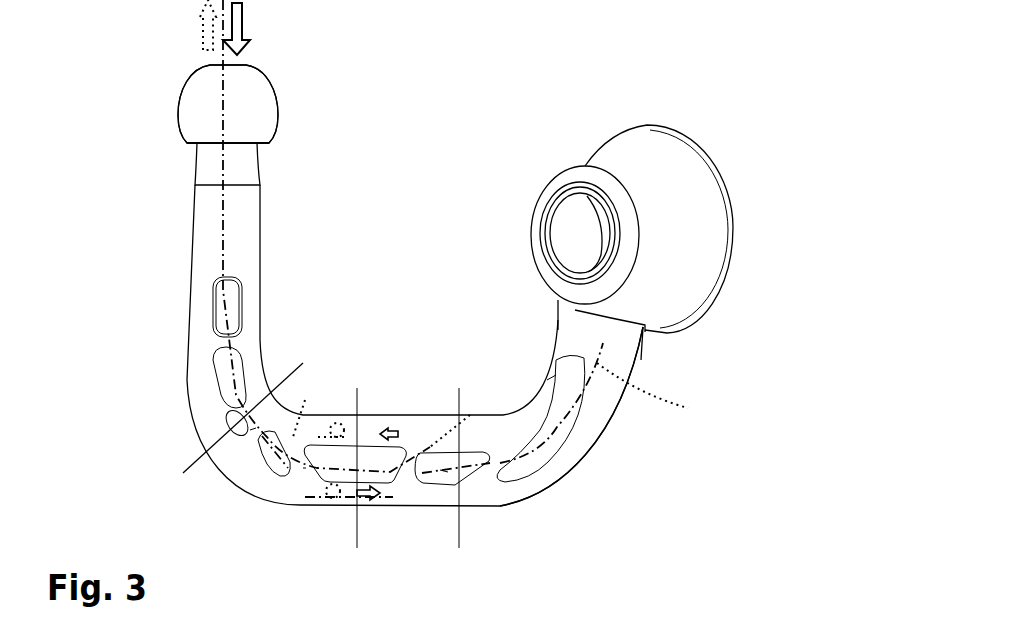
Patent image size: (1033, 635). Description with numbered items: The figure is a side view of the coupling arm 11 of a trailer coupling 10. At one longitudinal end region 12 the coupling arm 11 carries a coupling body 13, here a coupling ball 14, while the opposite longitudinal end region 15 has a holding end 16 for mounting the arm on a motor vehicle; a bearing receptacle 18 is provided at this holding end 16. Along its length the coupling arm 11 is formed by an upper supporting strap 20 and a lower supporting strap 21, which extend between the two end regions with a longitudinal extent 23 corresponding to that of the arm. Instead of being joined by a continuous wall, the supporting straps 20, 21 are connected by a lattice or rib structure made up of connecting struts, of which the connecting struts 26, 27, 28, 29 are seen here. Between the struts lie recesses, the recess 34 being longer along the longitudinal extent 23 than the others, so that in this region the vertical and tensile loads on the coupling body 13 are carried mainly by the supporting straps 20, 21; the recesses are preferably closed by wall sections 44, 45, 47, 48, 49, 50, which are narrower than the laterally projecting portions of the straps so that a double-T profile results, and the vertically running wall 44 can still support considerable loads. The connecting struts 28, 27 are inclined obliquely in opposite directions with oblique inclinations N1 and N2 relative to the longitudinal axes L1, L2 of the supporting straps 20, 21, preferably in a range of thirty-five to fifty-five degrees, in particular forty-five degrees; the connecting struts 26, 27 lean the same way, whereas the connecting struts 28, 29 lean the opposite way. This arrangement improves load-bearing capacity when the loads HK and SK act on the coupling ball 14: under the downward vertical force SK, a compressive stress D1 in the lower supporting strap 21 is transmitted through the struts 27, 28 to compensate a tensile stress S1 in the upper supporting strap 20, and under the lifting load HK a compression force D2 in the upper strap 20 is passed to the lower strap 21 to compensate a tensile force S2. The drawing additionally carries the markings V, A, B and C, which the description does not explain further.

The trailer coupling 10 is at (780, 152).
The coupling arm 11 is at (615, 408).
The longitudinal end region 12 is at (255, 167).
The coupling body 13 is at (270, 122).
The coupling ball 14 is at (267, 80).
The longitudinal end region 15 is at (625, 345).
The holding end 16 is at (680, 134).
The bearing receptacle 18 is at (565, 243).
The supporting strap 20 is at (552, 378).
The supporting strap 21 is at (558, 483).
The longitudinal extent 23 is at (664, 392).
The connecting strut 26 is at (497, 460).
The connecting strut 27 is at (447, 473).
The connecting strut 28 is at (303, 470).
The connecting strut 29 is at (252, 430).
The recess 34 is at (562, 437).
The wall section 44 is at (550, 428).
The wall section 45 is at (425, 480).
The wall section 47 is at (277, 463).
The wall section 48 is at (230, 420).
The wall section 49 is at (227, 373).
The wall section 50 is at (218, 307).
The vertical load HK is at (203, 30).
The vertical force SK is at (237, 25).
The vertical axis V is at (225, 92).
The section plane A- A is at (297, 363).
The dimension B is at (357, 395).
The dimension C is at (459, 392).
The compressive stress D1 is at (350, 500).
The compression force D2 is at (337, 427).
The tensile stress S1 is at (398, 432).
The tensile force S2 is at (338, 497).
The oblique inclination N1 is at (307, 409).
The oblique inclination N2 is at (469, 418).
The longitudinal axis L1 is at (388, 445).
The longitudinal axis L2 is at (300, 483).